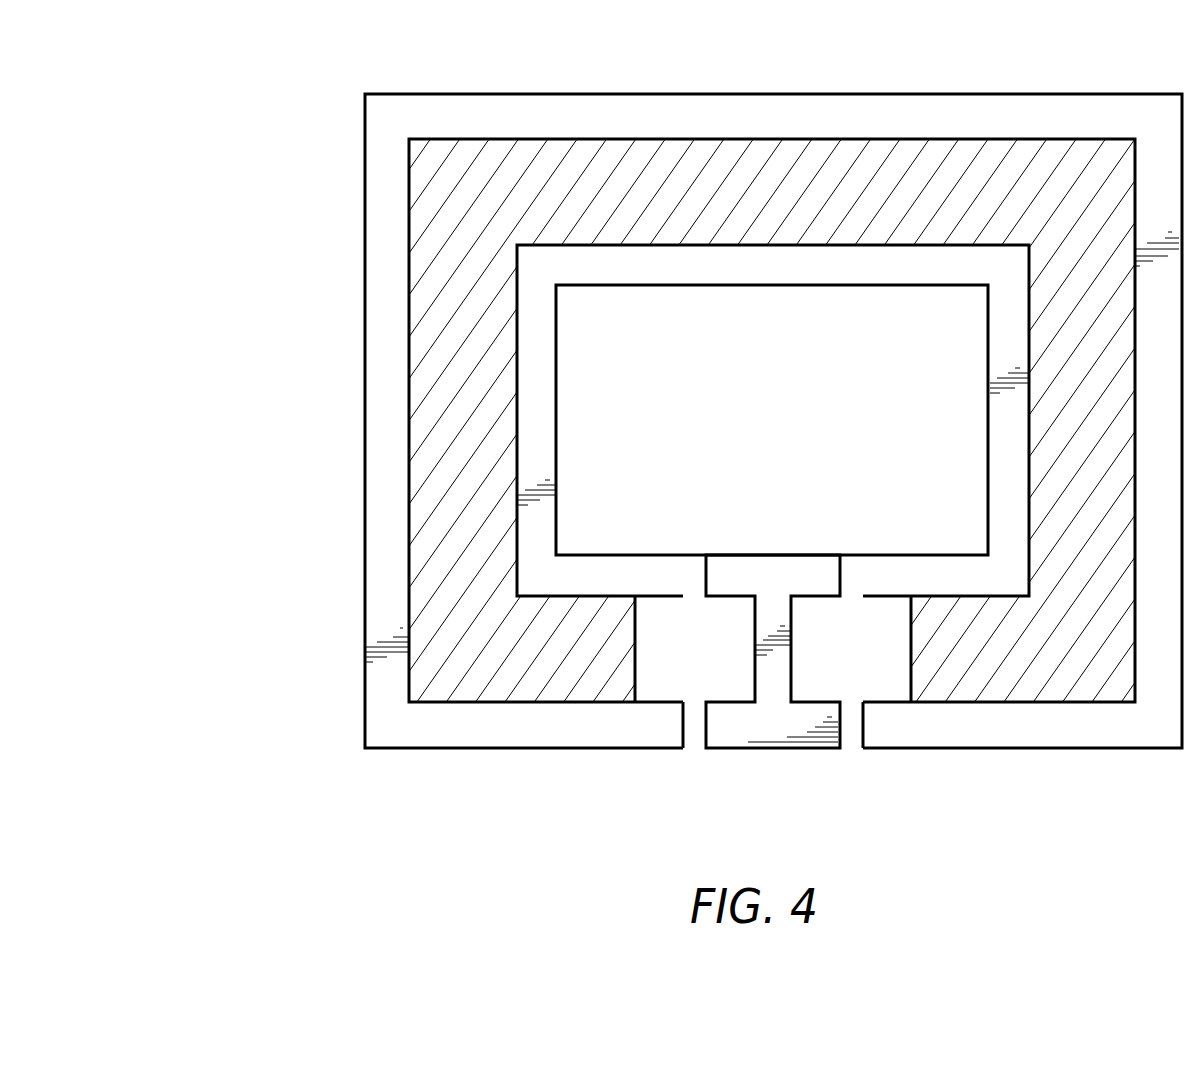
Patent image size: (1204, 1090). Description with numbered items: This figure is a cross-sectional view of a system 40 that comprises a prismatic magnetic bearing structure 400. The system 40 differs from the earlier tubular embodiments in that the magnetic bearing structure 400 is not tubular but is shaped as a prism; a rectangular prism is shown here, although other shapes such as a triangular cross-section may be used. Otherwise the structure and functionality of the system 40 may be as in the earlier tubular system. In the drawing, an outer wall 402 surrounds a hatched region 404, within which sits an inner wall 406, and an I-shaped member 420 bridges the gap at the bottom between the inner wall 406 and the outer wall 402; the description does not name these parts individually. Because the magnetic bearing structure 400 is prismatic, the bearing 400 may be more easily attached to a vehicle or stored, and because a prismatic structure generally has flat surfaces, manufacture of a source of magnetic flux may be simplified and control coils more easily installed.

The system 40 is at (190, 119).
The prismatic magnetic bearing structure 400 is at (443, 93).
The outer wall 402 is at (362, 709).
The filler material 404 is at (539, 688).
The inner wall 406 is at (622, 555).
The connecting member 420 is at (770, 750).